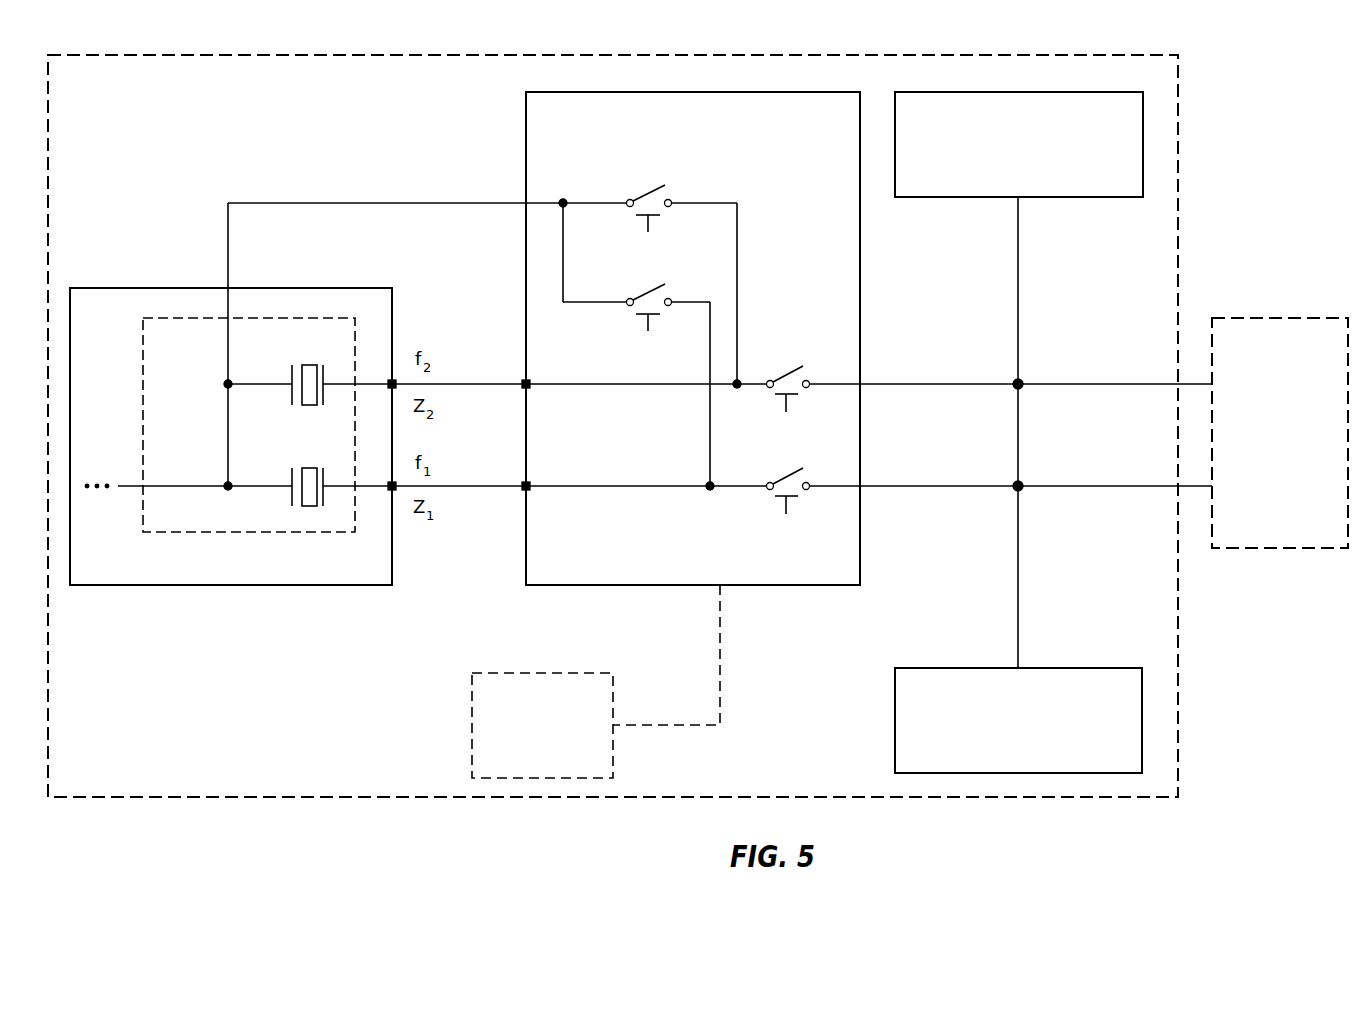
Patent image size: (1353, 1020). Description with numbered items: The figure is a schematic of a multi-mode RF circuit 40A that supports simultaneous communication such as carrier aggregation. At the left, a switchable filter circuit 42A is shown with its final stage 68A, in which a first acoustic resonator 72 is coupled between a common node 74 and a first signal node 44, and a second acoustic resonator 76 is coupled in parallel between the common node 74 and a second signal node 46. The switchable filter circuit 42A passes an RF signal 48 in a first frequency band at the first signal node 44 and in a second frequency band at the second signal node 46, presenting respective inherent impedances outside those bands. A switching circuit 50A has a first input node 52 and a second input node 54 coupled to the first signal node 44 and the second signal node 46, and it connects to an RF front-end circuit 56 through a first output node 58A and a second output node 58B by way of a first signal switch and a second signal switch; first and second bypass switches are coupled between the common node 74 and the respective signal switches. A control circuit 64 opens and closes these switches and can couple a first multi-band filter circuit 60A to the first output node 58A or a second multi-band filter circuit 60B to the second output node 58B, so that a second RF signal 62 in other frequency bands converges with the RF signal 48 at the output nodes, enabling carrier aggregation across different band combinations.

The multi-mode RF circuit 40A is at (613, 426).
The switchable filter circuit 42A is at (231, 436).
The final stage 68A is at (249, 425).
The common node 74 is at (226, 484).
The second acoustic resonator 76 is at (290, 370).
The first acoustic resonator 72 is at (290, 471).
The second signal node 46 is at (392, 388).
The first signal node 44 is at (392, 490).
The RF signal 48 is at (482, 385).
The switching circuit 50A is at (693, 338).
The second input node 54 is at (528, 388).
The first input node 52 is at (528, 490).
The control circuit 64 is at (596, 681).
The second multi-band filter circuit 60B is at (1019, 144).
The first multi-band filter circuit 60A is at (1018, 720).
The second RF signal 62 is at (1010, 247).
The second output node 58B is at (1022, 389).
The first output node 58A is at (1022, 491).
The RF front-end circuit 56 is at (1280, 433).